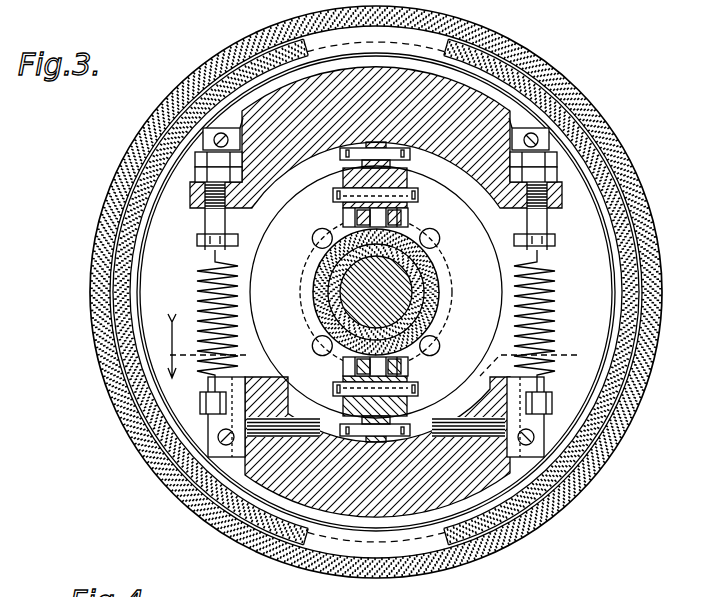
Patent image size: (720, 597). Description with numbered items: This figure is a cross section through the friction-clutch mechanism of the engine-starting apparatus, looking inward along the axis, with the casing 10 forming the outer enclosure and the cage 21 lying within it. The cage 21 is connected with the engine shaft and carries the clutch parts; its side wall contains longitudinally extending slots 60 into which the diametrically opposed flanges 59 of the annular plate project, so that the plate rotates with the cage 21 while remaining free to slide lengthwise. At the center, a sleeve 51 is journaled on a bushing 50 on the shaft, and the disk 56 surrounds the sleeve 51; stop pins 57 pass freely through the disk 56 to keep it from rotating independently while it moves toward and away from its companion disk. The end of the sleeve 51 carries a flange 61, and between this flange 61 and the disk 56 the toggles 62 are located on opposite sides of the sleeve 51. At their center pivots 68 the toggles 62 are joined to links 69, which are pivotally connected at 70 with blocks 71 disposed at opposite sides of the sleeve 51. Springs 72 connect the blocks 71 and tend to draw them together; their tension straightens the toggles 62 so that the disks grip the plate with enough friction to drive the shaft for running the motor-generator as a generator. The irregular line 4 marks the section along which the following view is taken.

The irregular line 4 is at (372, 346).
The casing 10 is at (640, 252).
The cage 21 is at (600, 448).
The bushing 50 is at (441, 240).
The sleeve 51 is at (333, 232).
The disk 56 is at (600, 206).
The stop pins 57 is at (376, 292).
The flanges 59 is at (332, 42).
The slots 60 is at (446, 36).
The flange 61 is at (376, 292).
The toggles 62 is at (410, 220).
The center pivots 68 is at (420, 194).
The links 69 is at (404, 178).
The pivotal connection 70 is at (401, 150).
The blocks 71 is at (521, 72).
The springs 72 is at (195, 288).